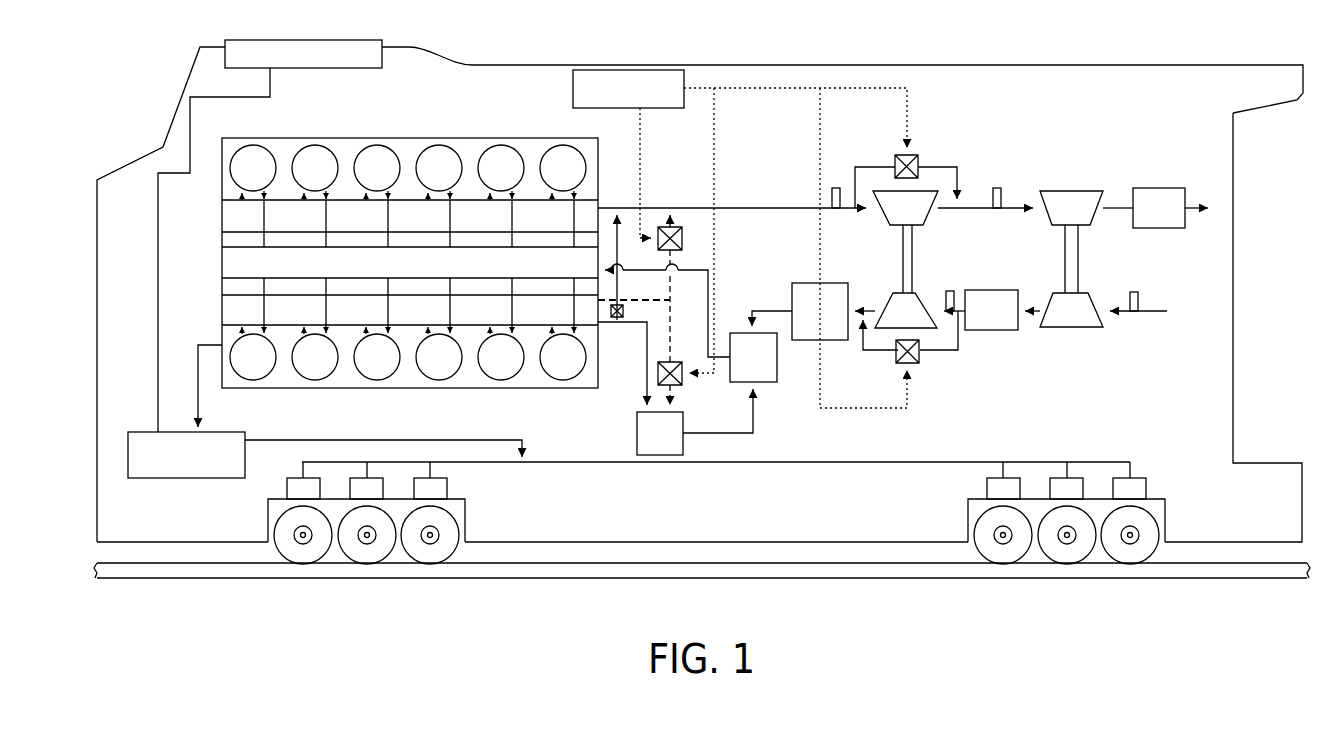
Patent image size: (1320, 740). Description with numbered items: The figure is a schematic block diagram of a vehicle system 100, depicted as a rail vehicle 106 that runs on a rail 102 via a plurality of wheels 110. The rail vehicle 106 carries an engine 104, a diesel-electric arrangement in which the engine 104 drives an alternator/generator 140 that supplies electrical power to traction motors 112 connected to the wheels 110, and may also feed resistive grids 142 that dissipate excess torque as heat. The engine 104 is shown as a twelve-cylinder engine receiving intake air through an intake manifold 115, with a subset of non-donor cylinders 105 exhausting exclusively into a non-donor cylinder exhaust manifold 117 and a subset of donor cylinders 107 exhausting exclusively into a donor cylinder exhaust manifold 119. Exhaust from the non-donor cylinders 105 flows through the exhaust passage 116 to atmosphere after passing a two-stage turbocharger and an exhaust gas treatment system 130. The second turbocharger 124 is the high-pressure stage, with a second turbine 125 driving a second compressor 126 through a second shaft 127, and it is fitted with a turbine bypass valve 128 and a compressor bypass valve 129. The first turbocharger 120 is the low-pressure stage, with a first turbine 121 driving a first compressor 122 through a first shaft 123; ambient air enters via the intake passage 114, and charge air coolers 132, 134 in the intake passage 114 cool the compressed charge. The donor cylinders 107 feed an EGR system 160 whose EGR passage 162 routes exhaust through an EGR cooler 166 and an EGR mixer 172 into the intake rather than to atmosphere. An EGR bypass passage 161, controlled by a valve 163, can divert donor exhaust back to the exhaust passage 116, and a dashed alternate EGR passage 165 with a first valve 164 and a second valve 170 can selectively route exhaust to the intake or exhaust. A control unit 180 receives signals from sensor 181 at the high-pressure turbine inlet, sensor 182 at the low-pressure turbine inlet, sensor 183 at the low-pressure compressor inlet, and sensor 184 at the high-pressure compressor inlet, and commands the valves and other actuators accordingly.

The vehicle system 100 is at (1142, 38).
The rail 102 is at (1228, 580).
The engine 104 is at (387, 258).
The non-donor cylinders 105 is at (378, 146).
The rail vehicle 106 is at (1004, 64).
The donor cylinders 107 is at (378, 381).
The wheels 110 is at (452, 521).
The traction motors 112 is at (448, 488).
The intake passage 114 is at (1118, 311).
The intake manifold 115 is at (387, 264).
The exhaust passage 116 is at (752, 207).
The non-donor cylinder exhaust manifold 117 is at (221, 217).
The donor cylinder exhaust manifold 119 is at (221, 311).
The first turbocharger 120 is at (1087, 337).
The first turbine 121 is at (1071, 208).
The first compressor 122 is at (1073, 344).
The first shaft 123 is at (1078, 270).
The second turbocharger 124 is at (929, 353).
The second turbine 125 is at (905, 208).
The second compressor 126 is at (896, 310).
The second shaft 127 is at (912, 268).
The turbine bypass valve 128 is at (918, 159).
The compressor bypass valve 129 is at (898, 358).
The exhaust gas treatment system 130 is at (1170, 208).
The charge air cooler 132 is at (981, 310).
The charge air cooler 134 is at (800, 311).
The alternator/generator 140 is at (325, 411).
The resistive grids 142 is at (366, 40).
The EGR system 160 is at (707, 334).
The EGR bypass passage 161 is at (617, 232).
The EGR passage 162 is at (647, 343).
The valve 163 is at (621, 303).
The first valve 164 is at (682, 240).
The alternate EGR passage 165 is at (672, 301).
The EGR cooler 166 is at (695, 422).
The second valve 170 is at (681, 386).
The EGR mixer 172 is at (691, 323).
The control unit 180 is at (740, 239).
The sensor 181 is at (836, 188).
The sensor 182 is at (997, 188).
The sensor 183 is at (1134, 292).
The sensor 184 is at (950, 291).